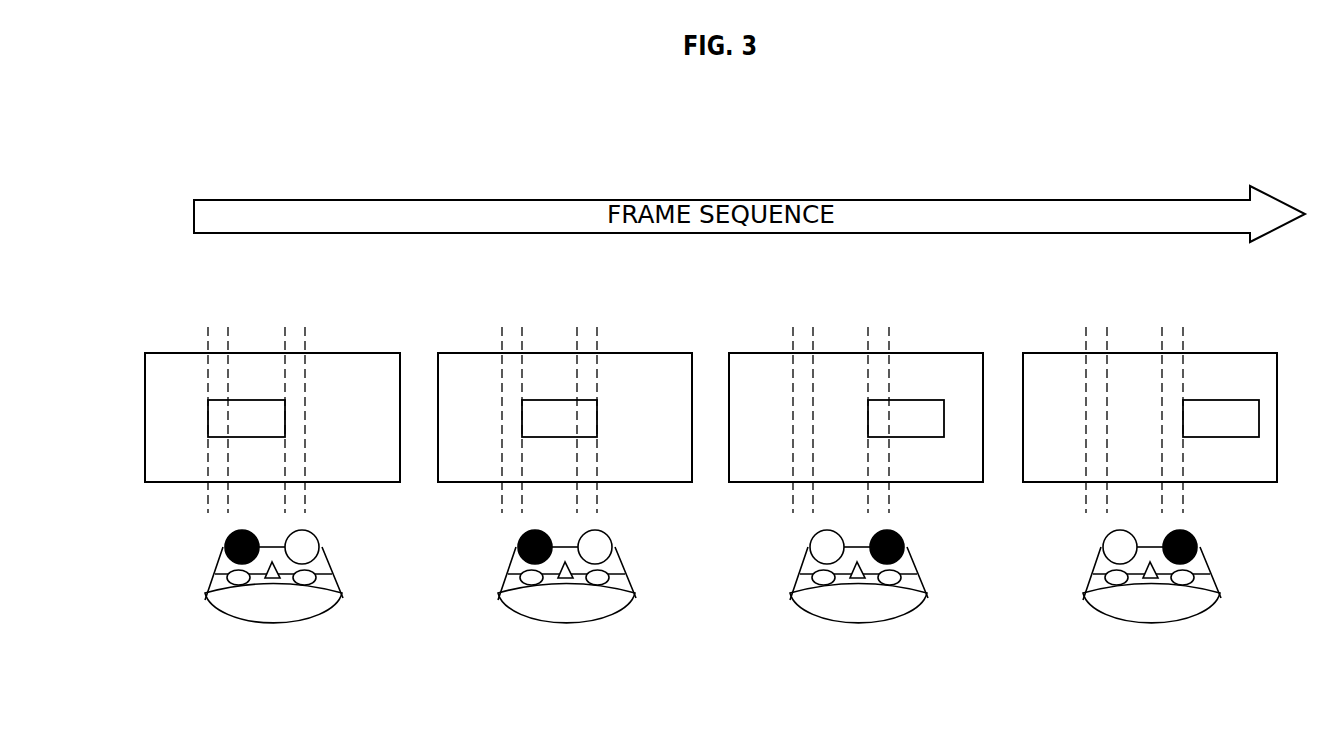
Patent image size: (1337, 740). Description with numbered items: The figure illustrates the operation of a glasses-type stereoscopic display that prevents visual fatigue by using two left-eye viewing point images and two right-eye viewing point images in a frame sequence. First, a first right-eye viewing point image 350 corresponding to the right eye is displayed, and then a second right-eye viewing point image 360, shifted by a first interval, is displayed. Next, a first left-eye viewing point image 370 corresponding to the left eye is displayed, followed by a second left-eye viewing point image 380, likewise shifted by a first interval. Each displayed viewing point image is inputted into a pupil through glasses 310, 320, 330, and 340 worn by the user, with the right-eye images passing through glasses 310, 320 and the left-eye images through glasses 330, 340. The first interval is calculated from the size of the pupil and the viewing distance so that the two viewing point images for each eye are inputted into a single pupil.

The glasses 310 is at (332, 565).
The glasses 320 is at (605, 576).
The glasses 330 is at (897, 576).
The glasses 340 is at (1190, 576).
The first right-eye viewing point image 350 is at (258, 400).
The second right-eye viewing point image 360 is at (552, 400).
The first left-eye viewing point image 370 is at (920, 400).
The second left-eye viewing point image 380 is at (1222, 400).